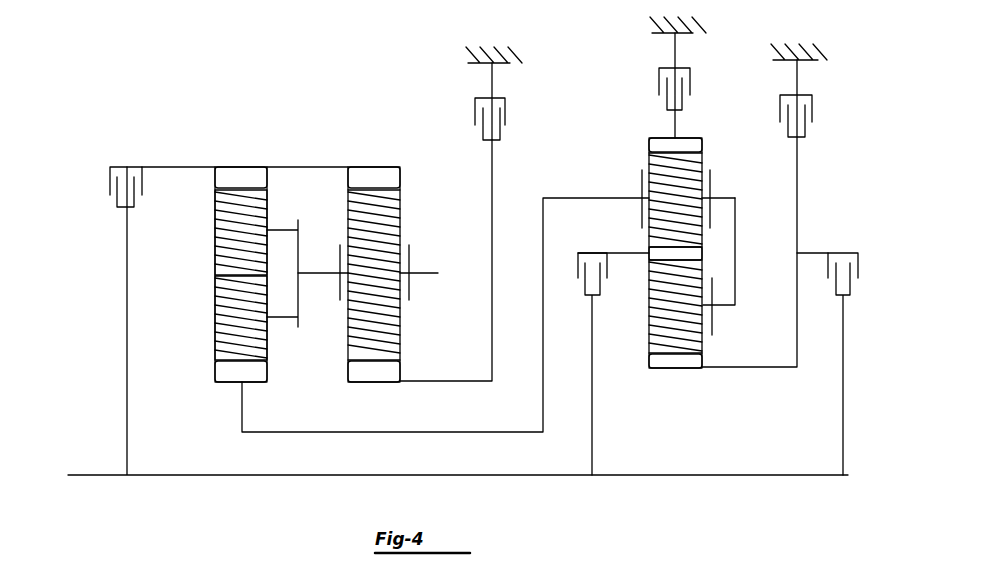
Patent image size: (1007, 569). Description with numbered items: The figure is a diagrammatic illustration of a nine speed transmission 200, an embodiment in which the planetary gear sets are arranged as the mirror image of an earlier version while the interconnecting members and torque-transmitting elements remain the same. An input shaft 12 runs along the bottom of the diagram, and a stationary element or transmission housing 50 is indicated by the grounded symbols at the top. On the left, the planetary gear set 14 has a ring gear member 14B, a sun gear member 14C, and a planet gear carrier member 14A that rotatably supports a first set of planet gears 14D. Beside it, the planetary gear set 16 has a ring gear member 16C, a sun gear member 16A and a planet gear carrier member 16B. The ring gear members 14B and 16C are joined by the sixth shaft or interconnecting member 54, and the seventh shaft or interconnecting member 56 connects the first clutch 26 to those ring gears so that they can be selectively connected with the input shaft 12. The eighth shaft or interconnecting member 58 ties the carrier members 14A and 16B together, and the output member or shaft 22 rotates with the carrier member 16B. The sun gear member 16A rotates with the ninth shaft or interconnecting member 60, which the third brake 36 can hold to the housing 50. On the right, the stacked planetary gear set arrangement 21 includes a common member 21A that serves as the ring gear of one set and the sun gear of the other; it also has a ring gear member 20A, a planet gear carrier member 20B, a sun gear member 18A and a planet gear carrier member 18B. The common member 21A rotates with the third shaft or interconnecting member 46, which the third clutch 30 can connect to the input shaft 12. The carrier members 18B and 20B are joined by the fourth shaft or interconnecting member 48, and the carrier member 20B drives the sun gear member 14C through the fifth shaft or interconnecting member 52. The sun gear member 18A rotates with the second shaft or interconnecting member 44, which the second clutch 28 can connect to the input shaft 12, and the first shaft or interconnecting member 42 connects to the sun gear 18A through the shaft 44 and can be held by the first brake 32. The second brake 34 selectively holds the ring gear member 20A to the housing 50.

The nine speed transmission 200 is at (238, 70).
The input shaft 12 is at (128, 365).
The first clutch 26 is at (110, 188).
The seventh shaft or interconnecting member 56 is at (165, 167).
The planetary gear set 14 is at (221, 148).
The ring gear member 14B is at (218, 178).
The sun gear member 14C is at (215, 222).
The first set of planet gears 14D is at (215, 325).
The planet gear carrier member 14A is at (298, 330).
The eighth shaft or interconnecting member 58 is at (316, 276).
The sixth shaft or interconnecting member 54 is at (300, 167).
The planetary gear set 16 is at (405, 150).
The ring gear member 16C is at (373, 172).
The sun gear member 16A is at (383, 372).
The planet gear carrier member 16B is at (340, 258).
The output member or shaft 22 is at (425, 272).
The transmission housing 50 is at (475, 65).
The third brake 36 is at (505, 112).
The ninth shaft or interconnecting member 60 is at (492, 333).
The fifth shaft or interconnecting member 52 is at (360, 433).
The fourth shaft or interconnecting member 48 is at (735, 248).
The third shaft or interconnecting member 46 is at (627, 253).
The third clutch 30 is at (578, 270).
The second shaft or interconnecting member 44 is at (787, 255).
The second clutch 28 is at (858, 278).
The first shaft or interconnecting member 42 is at (797, 188).
The first brake 32 is at (812, 112).
The second brake 34 is at (690, 78).
The stacked planetary gear set arrangement 21 is at (640, 112).
The ring gear member 20A is at (688, 143).
The planet gear carrier member 20B is at (641, 178).
The common member 21A is at (655, 255).
The planet gear carrier member 18B is at (715, 322).
The sun gear member 18A is at (668, 362).